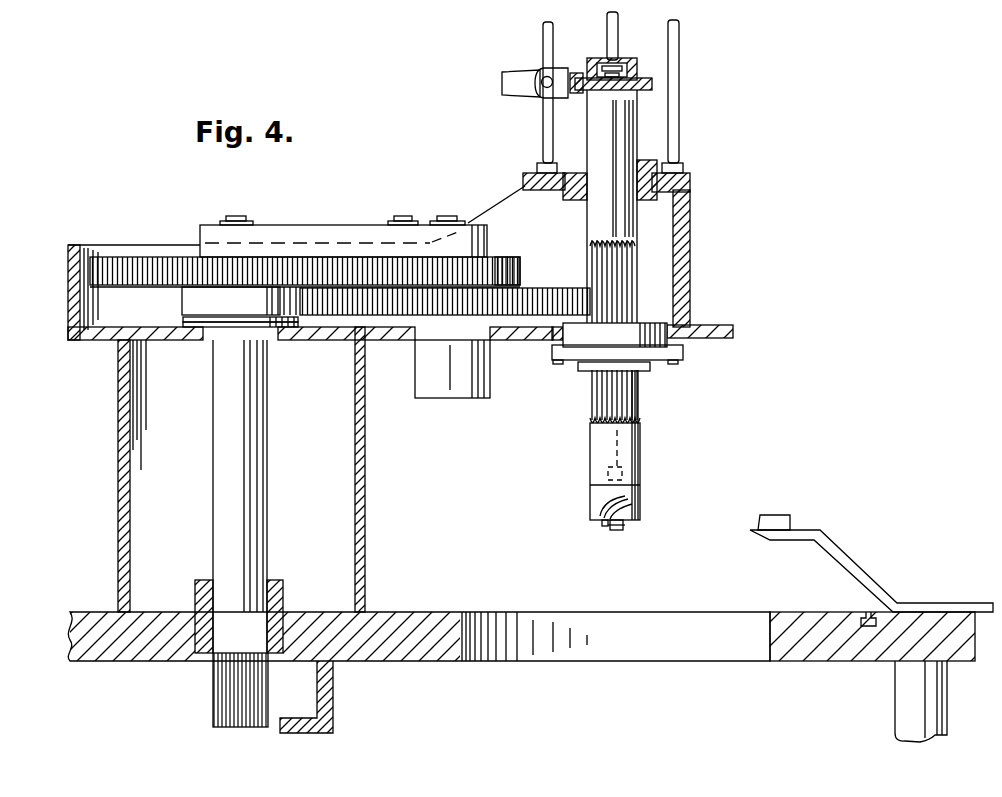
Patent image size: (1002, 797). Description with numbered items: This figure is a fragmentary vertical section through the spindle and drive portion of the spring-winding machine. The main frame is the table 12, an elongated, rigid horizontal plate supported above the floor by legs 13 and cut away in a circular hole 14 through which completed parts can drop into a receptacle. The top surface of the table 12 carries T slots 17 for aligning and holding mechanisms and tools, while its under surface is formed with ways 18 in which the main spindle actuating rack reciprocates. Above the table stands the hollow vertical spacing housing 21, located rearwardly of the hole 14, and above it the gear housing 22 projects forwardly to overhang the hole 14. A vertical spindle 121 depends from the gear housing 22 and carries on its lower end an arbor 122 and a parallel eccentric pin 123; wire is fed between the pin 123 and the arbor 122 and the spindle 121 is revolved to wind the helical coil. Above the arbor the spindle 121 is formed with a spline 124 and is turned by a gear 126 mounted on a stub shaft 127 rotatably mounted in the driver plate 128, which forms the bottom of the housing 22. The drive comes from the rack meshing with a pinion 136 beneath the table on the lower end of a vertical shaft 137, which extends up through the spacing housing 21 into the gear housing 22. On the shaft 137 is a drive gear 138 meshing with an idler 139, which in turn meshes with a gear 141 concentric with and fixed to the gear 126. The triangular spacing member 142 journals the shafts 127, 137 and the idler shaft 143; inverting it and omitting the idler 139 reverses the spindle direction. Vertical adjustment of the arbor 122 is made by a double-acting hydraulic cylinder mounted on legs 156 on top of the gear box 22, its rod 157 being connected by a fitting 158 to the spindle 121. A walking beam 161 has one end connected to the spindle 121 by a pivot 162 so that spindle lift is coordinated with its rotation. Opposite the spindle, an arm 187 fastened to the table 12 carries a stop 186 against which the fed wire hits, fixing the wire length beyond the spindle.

The table 12 is at (832, 655).
The legs 13 is at (948, 700).
The circular hole 14 is at (725, 652).
The T slots 17 is at (862, 612).
The ways 18 is at (333, 682).
The spacing housing 21 is at (365, 517).
The gear housing 22 is at (68, 290).
The vertical spindle 121 is at (640, 456).
The arbor 122 is at (624, 527).
The eccentric pin 123 is at (604, 527).
The spline 124 is at (638, 393).
The gear 126 is at (568, 290).
The stub shaft 127 is at (432, 347).
The driver plate 128 is at (528, 341).
The pinion 136 is at (220, 697).
The vertical shaft 137 is at (215, 480).
The drive gear 138 is at (148, 262).
The idler 139 is at (374, 262).
The gear 141 is at (513, 259).
The triangular spacing member 142 is at (293, 228).
The shaft of idler 143 is at (408, 221).
The legs 156 is at (543, 127).
The rod 157 is at (607, 33).
The fitting 158 is at (628, 62).
The walking beam 161 is at (503, 85).
The pivot 162 is at (543, 77).
The stop 186 is at (775, 515).
The arm 187 is at (862, 566).